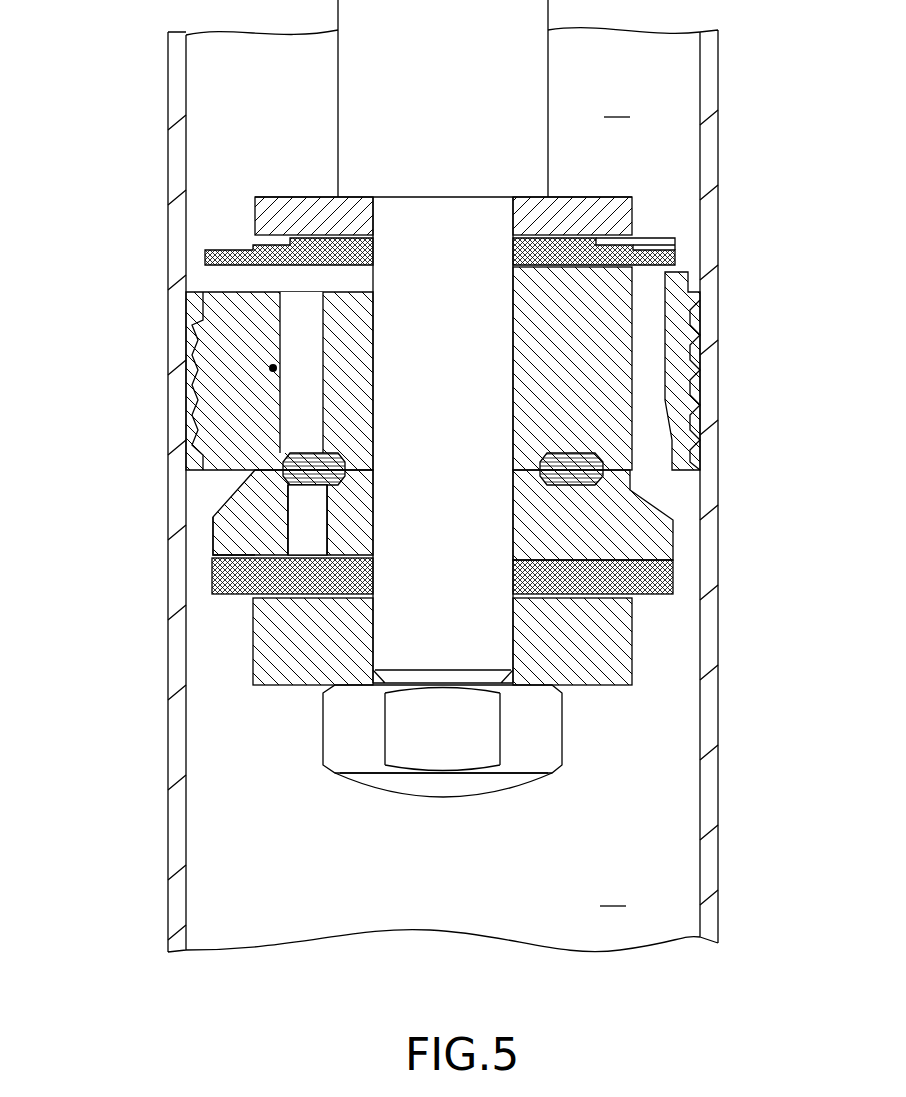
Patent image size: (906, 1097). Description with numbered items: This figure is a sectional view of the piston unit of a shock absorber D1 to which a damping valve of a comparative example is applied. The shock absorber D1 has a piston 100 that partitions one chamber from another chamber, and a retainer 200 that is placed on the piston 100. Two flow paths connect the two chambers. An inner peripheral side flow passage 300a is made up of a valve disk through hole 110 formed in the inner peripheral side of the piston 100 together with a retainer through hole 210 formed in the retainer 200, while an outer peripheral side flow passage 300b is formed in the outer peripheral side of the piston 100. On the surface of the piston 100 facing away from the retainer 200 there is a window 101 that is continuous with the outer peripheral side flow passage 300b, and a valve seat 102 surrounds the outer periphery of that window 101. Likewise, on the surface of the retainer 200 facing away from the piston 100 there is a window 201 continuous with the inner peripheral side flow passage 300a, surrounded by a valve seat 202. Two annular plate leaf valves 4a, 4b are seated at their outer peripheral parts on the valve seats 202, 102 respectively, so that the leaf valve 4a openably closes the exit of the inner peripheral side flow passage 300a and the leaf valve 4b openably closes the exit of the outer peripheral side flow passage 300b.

The shock absorber D1 is at (150, 118).
The leaf valve 4b is at (204, 242).
The valve disk through hole 110 is at (273, 368).
The inner peripheral side flow passage 300a is at (268, 370).
The retainer through hole 210 is at (297, 521).
The window 201 is at (215, 548).
The valve seat 202 is at (222, 594).
The window 101 is at (655, 249).
The valve seat 102 is at (671, 247).
The piston 100 is at (688, 270).
The outer peripheral side flow passage 300b is at (650, 365).
The retainer 200 is at (687, 528).
The leaf valve 4a is at (658, 596).